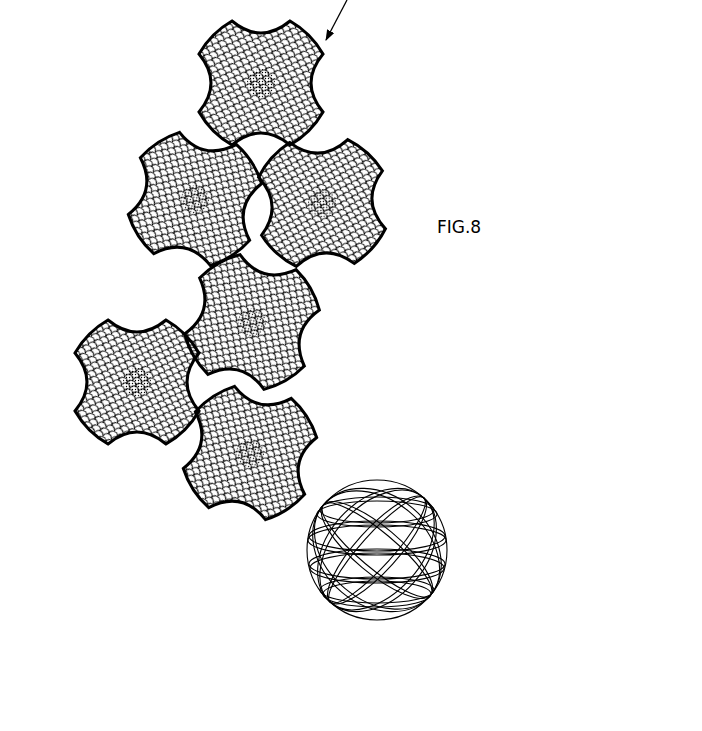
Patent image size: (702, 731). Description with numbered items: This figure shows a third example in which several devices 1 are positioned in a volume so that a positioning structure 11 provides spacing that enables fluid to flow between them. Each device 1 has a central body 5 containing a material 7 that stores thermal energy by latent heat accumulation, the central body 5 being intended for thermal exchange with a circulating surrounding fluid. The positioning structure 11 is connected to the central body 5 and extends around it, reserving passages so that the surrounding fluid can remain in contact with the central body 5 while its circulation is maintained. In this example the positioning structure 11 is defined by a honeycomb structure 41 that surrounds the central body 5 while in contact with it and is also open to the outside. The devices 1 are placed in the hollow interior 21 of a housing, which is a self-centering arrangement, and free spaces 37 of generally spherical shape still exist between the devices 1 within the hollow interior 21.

The device 1 is at (433, 455).
The central body 5 is at (318, 328).
The material for storing thermal energy 7 is at (282, 82).
The positioning structure 11 is at (325, 128).
The hollow interior 21 is at (292, 329).
The free spaces 37 is at (253, 146).
The honeycomb structure 41 is at (357, 258).